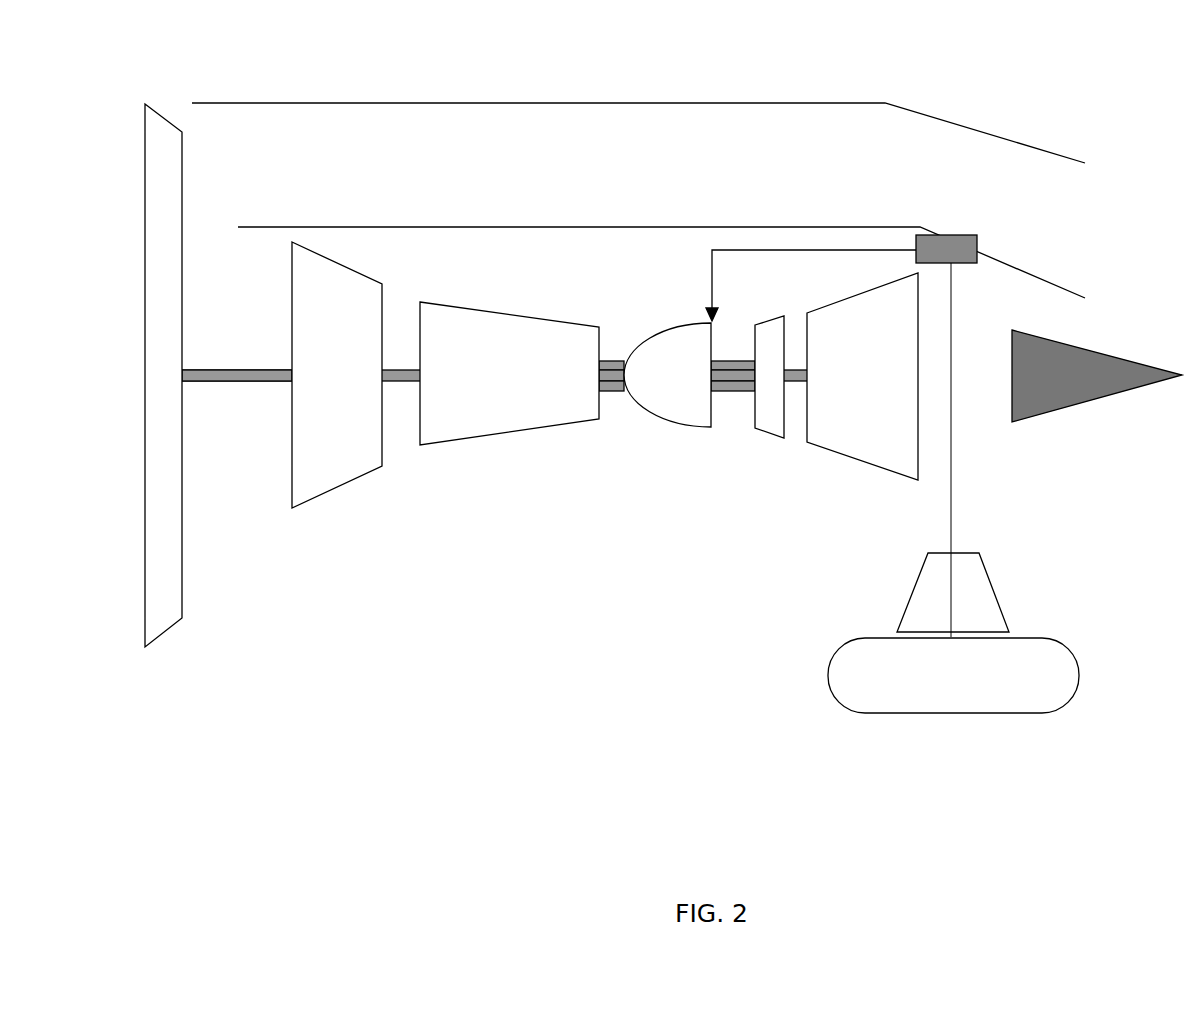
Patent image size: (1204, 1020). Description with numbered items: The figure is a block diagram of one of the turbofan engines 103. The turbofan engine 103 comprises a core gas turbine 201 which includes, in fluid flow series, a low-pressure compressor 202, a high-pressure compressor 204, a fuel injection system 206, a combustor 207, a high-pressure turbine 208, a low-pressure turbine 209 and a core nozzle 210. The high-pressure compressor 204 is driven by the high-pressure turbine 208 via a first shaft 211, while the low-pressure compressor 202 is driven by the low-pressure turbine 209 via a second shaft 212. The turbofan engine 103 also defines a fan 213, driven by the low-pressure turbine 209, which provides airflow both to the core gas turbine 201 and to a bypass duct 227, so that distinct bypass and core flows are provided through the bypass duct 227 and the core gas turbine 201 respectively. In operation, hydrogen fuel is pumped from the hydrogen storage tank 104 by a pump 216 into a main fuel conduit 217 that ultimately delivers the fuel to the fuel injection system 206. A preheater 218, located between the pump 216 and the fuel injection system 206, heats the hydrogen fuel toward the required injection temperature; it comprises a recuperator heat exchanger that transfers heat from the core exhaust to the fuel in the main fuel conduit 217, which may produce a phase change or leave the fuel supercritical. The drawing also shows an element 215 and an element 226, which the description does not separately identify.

The turbofan engine 103 is at (455, 78).
The hydrogen storage tank 104 is at (955, 715).
The core gas turbine 201 is at (697, 214).
The low-pressure compressor 202 is at (360, 276).
The high-pressure compressor 204 is at (472, 308).
The fuel injection system 206 is at (645, 380).
The combustor 207 is at (713, 345).
The high-pressure turbine 208 is at (770, 430).
The low-pressure turbine 209 is at (822, 448).
The core nozzle 210 is at (1070, 320).
The first shaft 211 is at (613, 358).
The second shaft 212 is at (395, 368).
The fan 213 is at (183, 185).
The fan shaft 215 is at (201, 388).
The pump 216 is at (995, 592).
The main fuel conduit 217 is at (955, 490).
The preheater 218 is at (980, 250).
The compressor section 226 is at (445, 330).
The bypass duct 227 is at (562, 156).